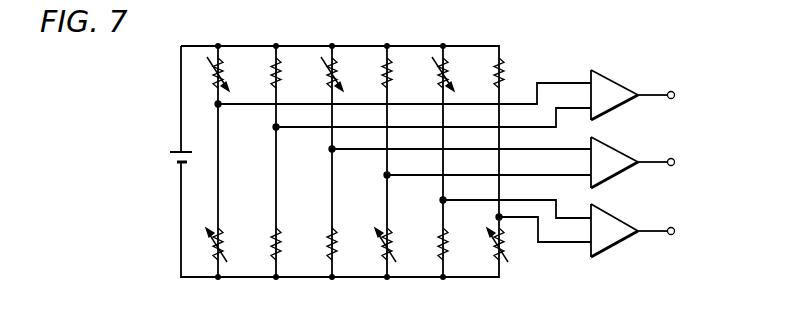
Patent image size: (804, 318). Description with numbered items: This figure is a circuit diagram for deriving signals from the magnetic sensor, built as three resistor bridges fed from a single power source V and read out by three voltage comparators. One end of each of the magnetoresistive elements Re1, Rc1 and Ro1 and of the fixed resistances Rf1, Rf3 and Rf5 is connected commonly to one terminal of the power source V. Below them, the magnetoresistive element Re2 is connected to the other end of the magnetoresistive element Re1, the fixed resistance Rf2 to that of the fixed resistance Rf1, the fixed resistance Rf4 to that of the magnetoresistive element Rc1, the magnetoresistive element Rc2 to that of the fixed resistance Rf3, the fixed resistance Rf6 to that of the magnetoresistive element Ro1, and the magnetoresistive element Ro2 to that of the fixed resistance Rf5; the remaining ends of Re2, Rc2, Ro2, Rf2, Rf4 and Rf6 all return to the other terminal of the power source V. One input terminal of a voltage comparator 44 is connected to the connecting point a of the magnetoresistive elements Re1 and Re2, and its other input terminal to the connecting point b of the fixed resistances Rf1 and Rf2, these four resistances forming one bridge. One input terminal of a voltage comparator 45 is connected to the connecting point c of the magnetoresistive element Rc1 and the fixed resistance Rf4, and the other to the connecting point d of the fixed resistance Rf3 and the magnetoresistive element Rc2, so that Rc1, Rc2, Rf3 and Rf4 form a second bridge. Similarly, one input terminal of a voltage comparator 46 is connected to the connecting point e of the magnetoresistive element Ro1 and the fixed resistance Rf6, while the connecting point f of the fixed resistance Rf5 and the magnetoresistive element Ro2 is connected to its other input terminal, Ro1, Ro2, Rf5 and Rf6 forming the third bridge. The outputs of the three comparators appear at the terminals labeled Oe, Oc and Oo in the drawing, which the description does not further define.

The voltage comparator 44 is at (618, 83).
The voltage comparator 45 is at (618, 150).
The voltage comparator 46 is at (618, 218).
The power source V is at (172, 150).
The magnetoresistive element Re1 is at (224, 60).
The fixed resistance Rf1 is at (282, 60).
The magnetoresistive element Rc1 is at (338, 60).
The fixed resistance Rf3 is at (393, 60).
The magnetoresistive element Ro1 is at (449, 60).
The fixed resistance Rf5 is at (505, 60).
The magnetoresistive element Re2 is at (224, 262).
The fixed resistance Rf2 is at (282, 262).
The fixed resistance Rf4 is at (338, 262).
The magnetoresistive element Rc2 is at (393, 262).
The fixed resistance Rf6 is at (449, 262).
The magnetoresistive element Ro2 is at (505, 262).
The connecting point a is at (225, 113).
The connecting point b is at (283, 136).
The connecting point c is at (338, 158).
The connecting point d is at (394, 184).
The connecting point e is at (449, 208).
The connecting point f is at (504, 226).
The even output terminal Oe is at (672, 96).
The center output terminal Oc is at (671, 163).
The odd output terminal Oo is at (672, 232).